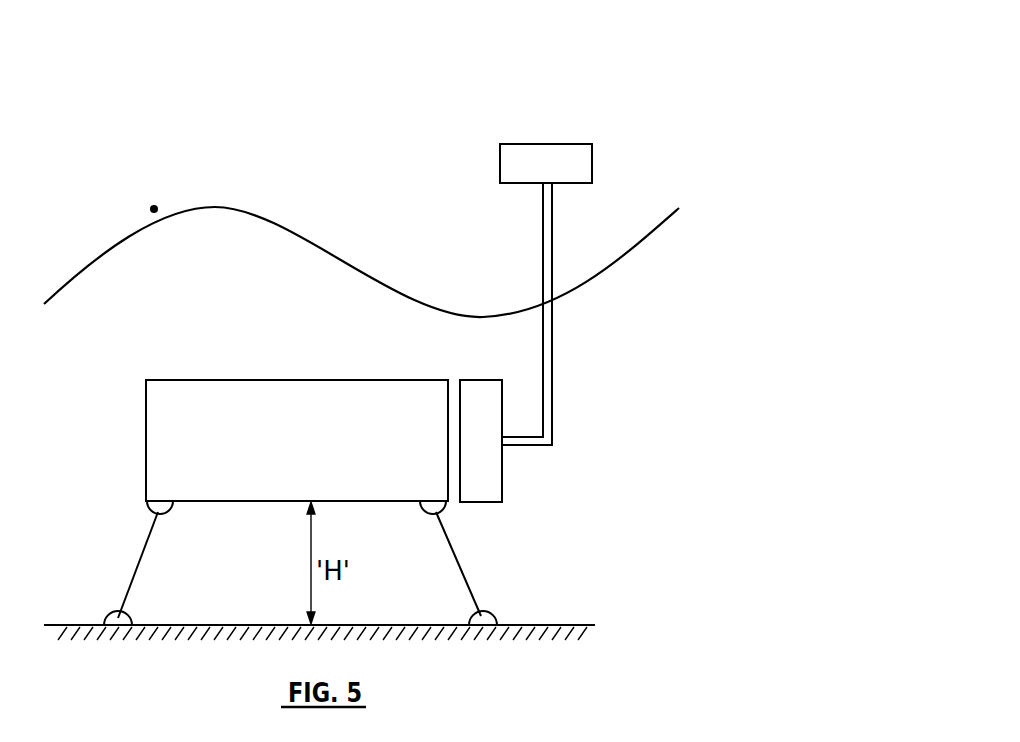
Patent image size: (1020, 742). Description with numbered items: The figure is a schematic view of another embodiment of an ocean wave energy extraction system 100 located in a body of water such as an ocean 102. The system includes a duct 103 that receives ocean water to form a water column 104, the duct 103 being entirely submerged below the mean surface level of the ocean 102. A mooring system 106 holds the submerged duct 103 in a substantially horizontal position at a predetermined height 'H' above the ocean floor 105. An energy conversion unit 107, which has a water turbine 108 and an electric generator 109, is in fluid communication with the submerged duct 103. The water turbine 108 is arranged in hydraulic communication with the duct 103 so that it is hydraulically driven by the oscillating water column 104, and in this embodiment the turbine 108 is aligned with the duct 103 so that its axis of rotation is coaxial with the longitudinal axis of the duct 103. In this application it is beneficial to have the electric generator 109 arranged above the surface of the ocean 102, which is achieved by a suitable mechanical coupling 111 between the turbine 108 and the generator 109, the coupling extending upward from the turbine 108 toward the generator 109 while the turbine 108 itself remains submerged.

The ocean wave energy extraction system 100 is at (594, 100).
The ocean 102 is at (216, 232).
The duct 103 is at (236, 397).
The water column 104 is at (326, 452).
The ocean floor 105 is at (557, 624).
The mooring system 106 is at (131, 572).
The energy conversion unit 107 is at (596, 320).
The water turbine 108 is at (492, 481).
The electric generator 109 is at (509, 163).
The mechanical coupling 111 is at (547, 412).